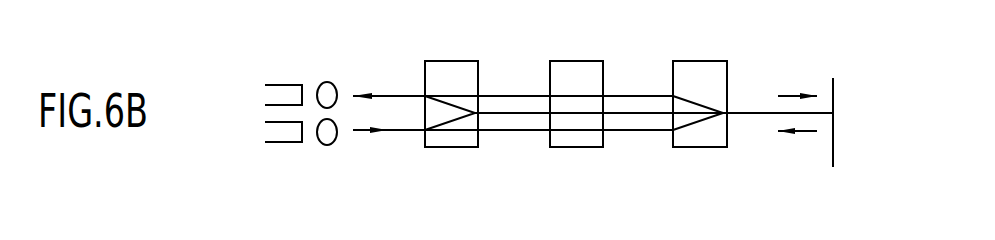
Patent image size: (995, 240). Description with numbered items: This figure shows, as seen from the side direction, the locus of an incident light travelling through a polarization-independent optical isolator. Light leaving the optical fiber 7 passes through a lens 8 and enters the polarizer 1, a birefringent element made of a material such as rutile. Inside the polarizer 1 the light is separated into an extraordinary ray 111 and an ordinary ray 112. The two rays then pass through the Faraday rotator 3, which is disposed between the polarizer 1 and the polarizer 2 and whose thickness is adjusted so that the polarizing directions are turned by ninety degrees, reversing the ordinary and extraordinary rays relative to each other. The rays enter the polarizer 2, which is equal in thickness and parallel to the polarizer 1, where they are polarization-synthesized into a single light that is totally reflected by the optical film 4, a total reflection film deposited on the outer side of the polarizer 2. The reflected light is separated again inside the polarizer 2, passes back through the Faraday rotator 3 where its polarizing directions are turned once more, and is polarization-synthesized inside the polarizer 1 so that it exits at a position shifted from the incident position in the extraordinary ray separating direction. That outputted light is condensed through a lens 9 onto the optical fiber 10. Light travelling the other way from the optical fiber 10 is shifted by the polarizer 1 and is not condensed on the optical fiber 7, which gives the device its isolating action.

The polarizer 1 is at (453, 61).
The ordinary ray 112 is at (447, 107).
The Faraday rotator 3 is at (580, 61).
The polarizer 2 is at (700, 61).
The optical film 4 is at (835, 93).
The optical fiber 10 is at (282, 86).
The optical fiber 7 is at (285, 137).
The lens 9 is at (327, 86).
The lens 8 is at (328, 137).
The extraordinary ray 111 is at (405, 130).